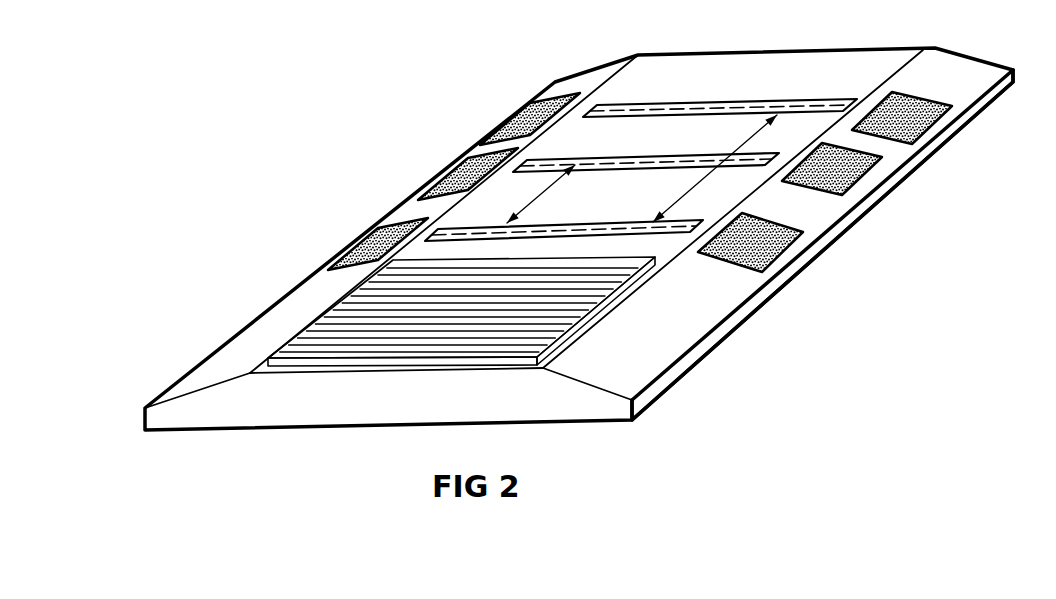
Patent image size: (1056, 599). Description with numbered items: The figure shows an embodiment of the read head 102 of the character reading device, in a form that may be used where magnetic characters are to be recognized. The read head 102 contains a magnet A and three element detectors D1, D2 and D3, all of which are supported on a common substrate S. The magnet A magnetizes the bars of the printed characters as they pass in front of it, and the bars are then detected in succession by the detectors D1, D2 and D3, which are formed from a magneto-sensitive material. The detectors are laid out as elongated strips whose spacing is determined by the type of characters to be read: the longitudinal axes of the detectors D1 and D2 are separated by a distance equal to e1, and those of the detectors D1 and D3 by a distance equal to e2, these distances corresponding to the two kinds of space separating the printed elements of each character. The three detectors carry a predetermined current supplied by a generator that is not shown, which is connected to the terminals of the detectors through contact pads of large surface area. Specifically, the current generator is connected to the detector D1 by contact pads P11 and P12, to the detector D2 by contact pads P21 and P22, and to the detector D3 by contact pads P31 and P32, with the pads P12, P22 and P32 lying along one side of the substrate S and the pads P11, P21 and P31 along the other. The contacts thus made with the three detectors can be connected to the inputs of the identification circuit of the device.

The read head 102 is at (385, 132).
The substrate S is at (647, 397).
The magnet A is at (420, 352).
The first detector D1 is at (567, 228).
The second detector D2 is at (640, 164).
The third detector D3 is at (704, 108).
The first spacing e1 is at (529, 194).
The second spacing e2 is at (715, 168).
The contact pad P12 is at (345, 256).
The contact pad P22 is at (444, 174).
The contact pad P32 is at (549, 112).
The contact pad P11 is at (772, 248).
The contact pad P21 is at (857, 175).
The contact pad P31 is at (925, 107).